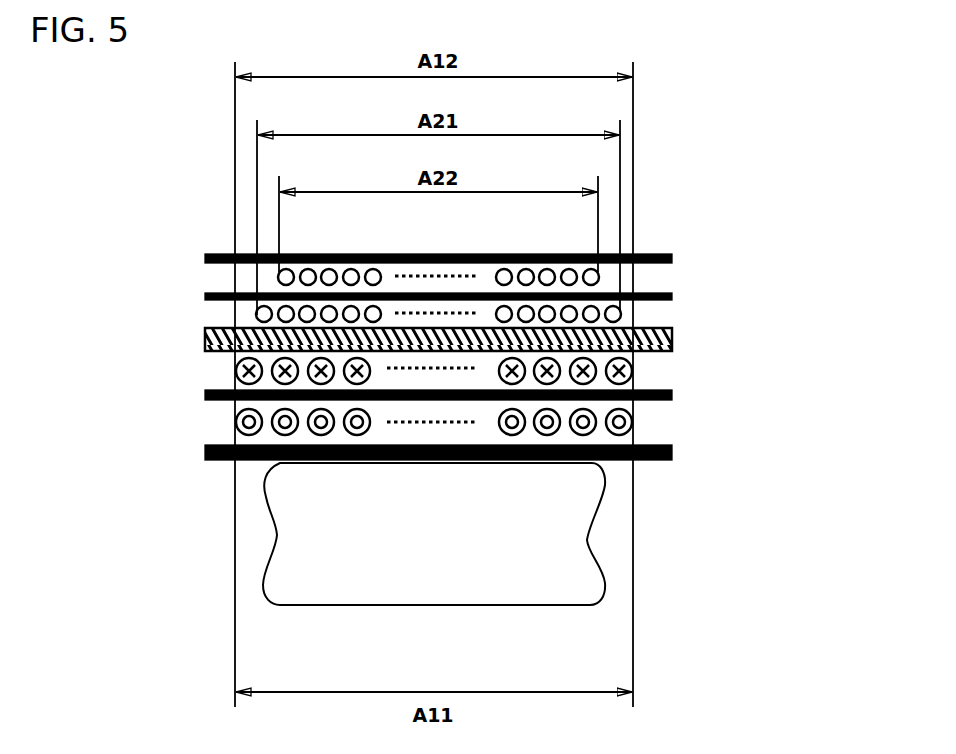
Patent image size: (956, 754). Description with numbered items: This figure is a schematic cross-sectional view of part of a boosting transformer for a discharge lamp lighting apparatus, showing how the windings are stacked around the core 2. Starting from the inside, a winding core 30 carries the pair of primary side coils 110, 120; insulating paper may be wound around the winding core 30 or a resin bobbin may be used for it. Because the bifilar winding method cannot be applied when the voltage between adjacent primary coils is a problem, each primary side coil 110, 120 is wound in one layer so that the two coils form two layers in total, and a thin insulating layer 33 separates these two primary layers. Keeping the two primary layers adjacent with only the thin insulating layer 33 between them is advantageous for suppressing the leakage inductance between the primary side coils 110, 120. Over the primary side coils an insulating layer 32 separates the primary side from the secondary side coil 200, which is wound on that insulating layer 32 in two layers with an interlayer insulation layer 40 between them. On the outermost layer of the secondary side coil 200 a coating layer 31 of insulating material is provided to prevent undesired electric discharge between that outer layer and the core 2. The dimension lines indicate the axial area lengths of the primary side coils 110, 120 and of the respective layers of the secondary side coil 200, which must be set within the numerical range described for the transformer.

The core 2 is at (335, 605).
The winding core 30 is at (205, 452).
The coating layer 31 is at (205, 258).
The insulating layer 32 is at (205, 340).
The insulating layer 33 is at (205, 395).
The interlayer insulation layer 40 is at (205, 296).
The primary side coil 110 is at (680, 403).
The primary side coil 120 is at (680, 347).
The secondary side coil 200 is at (680, 262).